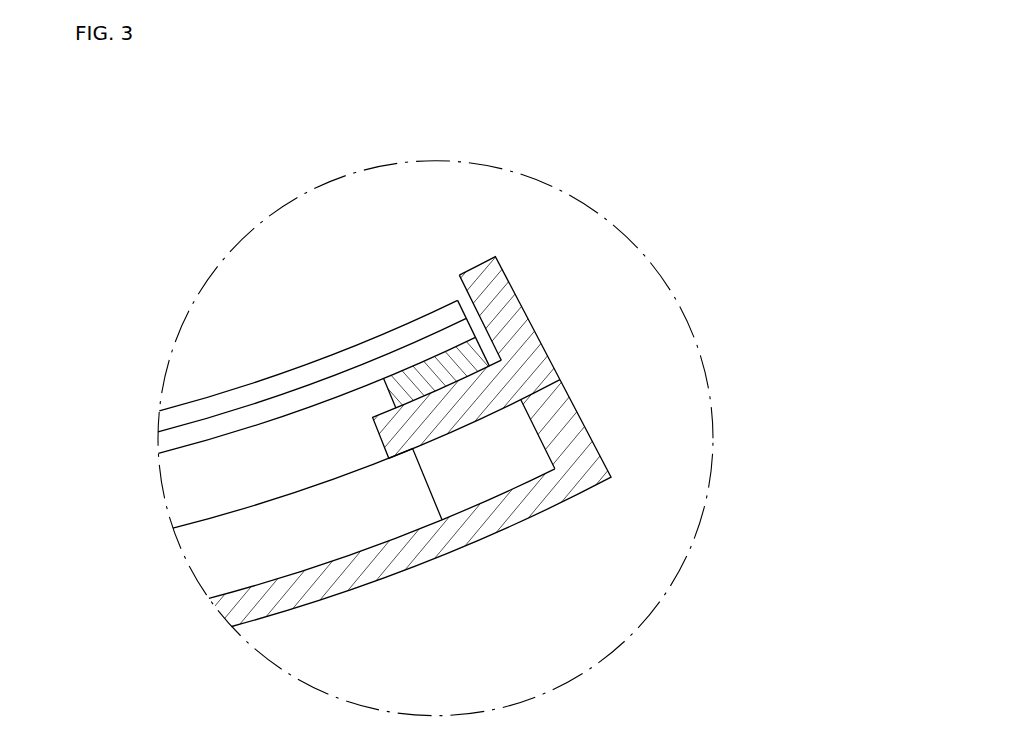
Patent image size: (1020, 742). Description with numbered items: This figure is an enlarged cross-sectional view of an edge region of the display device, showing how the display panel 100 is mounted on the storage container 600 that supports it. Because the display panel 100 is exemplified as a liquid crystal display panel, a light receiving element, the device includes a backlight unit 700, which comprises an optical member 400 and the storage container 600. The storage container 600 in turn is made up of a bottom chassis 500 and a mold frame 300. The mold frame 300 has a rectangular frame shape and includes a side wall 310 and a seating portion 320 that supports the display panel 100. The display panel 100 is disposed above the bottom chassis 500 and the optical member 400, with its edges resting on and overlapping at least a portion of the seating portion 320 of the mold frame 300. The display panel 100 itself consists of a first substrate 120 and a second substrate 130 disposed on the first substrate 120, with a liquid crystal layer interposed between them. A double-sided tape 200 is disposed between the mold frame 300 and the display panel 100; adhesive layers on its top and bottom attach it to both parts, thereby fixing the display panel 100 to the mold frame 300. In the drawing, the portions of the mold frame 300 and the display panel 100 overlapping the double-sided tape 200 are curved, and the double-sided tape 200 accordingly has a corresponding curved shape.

The display panel 100 is at (62, 400).
The first substrate 120 is at (163, 441).
The second substrate 130 is at (163, 421).
The double-sided tape 200 is at (432, 366).
The mold frame 300 is at (743, 242).
The side wall 310 is at (508, 315).
The seating portion 320 is at (473, 375).
The optical member 400 is at (410, 472).
The bottom chassis 500 is at (568, 413).
The storage container 600 is at (802, 273).
The backlight unit 700 is at (858, 302).